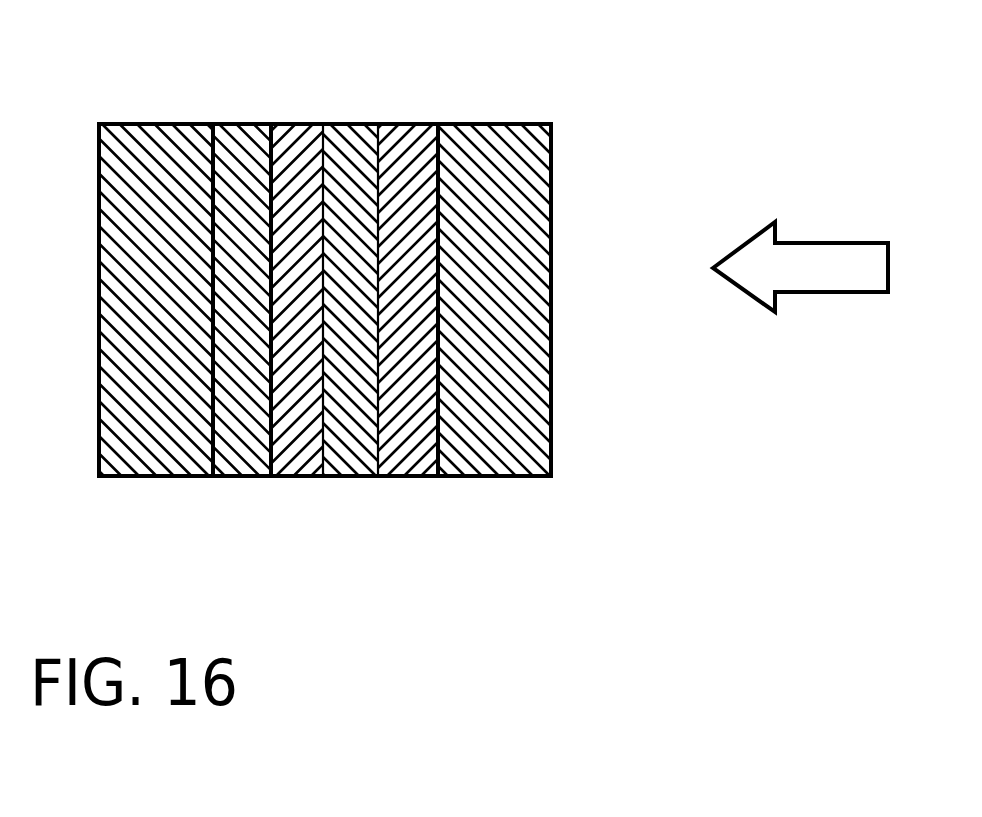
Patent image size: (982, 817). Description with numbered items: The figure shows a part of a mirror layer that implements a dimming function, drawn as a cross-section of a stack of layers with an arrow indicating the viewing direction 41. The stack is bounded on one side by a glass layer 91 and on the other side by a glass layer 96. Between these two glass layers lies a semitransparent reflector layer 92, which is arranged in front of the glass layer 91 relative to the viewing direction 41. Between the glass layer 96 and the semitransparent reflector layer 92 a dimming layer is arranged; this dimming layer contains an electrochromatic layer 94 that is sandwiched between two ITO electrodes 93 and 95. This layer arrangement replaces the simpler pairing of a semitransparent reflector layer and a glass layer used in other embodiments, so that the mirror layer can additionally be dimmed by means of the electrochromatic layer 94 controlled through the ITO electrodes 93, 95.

The viewing direction 41 is at (826, 265).
The glass layer 91 is at (133, 216).
The semitransparent reflector layer 92 is at (231, 427).
The ITO electrode 93 is at (302, 216).
The electrochromatic layer 94 is at (331, 427).
The ITO electrode 95 is at (419, 216).
The glass layer 96 is at (476, 427).